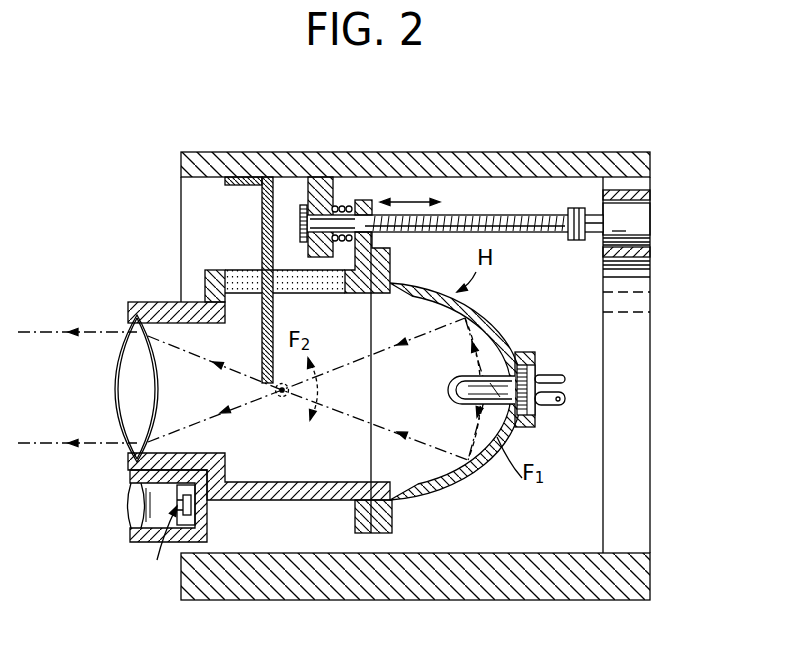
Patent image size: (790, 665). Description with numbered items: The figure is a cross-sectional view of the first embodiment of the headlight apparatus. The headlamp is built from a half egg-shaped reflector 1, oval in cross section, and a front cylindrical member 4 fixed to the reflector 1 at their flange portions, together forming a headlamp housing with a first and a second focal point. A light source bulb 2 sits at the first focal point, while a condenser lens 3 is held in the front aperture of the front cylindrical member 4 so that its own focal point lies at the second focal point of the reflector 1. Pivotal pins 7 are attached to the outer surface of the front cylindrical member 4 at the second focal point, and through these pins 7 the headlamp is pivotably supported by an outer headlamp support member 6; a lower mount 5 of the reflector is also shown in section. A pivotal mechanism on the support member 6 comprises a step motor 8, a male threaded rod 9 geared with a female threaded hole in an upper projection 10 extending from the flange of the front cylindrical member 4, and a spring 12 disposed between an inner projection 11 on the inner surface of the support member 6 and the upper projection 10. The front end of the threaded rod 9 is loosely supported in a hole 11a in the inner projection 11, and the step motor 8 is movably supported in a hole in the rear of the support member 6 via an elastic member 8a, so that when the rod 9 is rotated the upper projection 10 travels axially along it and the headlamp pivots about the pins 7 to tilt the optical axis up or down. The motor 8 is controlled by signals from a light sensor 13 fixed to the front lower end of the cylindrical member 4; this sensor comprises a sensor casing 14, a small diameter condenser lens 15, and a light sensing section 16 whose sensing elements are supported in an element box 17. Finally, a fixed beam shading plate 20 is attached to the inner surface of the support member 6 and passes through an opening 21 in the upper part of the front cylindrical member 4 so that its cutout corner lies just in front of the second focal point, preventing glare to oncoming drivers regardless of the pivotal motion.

The reflector 1 is at (492, 332).
The light source bulb 2 is at (497, 367).
The condenser lens 3 is at (118, 390).
The front cylindrical member 4 is at (158, 305).
The reflector mount 5 is at (355, 521).
The outer headlamp support member 6 is at (469, 160).
The pivotal pins 7 is at (285, 397).
The step motor 8 is at (645, 226).
The elastic member 8a is at (652, 196).
The male threaded rod 9 is at (541, 213).
The upper projection 10 is at (364, 200).
The inner projection 11 is at (320, 195).
The hole 11a is at (300, 208).
The spring 12 is at (341, 205).
The light sensor 13 is at (181, 554).
The sensor casing 14 is at (133, 530).
The small diameter condenser lens 15 is at (132, 508).
The light sensing section 16 is at (140, 547).
The element box 17 is at (208, 530).
The beam shading plate 20 is at (262, 215).
The opening 21 is at (228, 268).